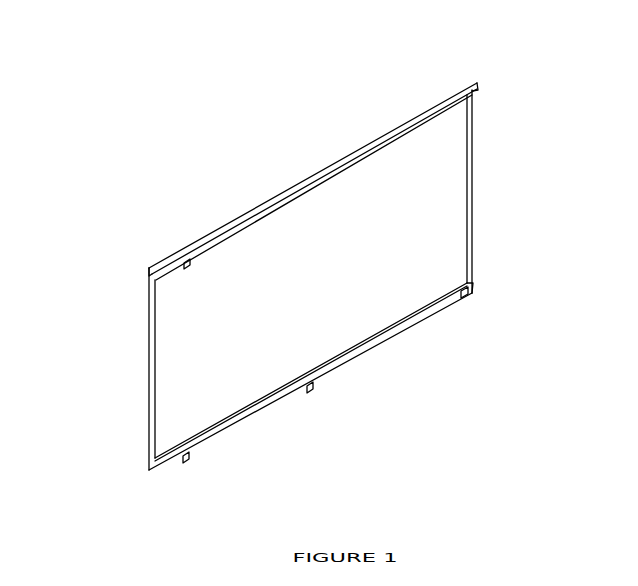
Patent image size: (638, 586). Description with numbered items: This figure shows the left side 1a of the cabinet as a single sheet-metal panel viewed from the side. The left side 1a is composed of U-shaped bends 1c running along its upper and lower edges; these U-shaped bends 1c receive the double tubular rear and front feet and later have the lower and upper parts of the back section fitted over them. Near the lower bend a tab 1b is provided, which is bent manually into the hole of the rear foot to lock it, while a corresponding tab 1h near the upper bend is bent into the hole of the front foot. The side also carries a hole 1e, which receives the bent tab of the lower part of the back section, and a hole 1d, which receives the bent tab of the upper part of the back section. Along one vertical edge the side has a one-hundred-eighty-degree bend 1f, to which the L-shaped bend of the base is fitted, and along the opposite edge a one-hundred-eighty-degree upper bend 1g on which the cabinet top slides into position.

The left side 1a is at (382, 217).
The tab 1b is at (186, 456).
The U-shaped bend 1c is at (293, 200).
The hole 1d is at (462, 298).
The hole 1e is at (310, 386).
The 180° bend 1f is at (155, 365).
The 180° upper bend 1g is at (472, 208).
The tab 1h is at (187, 262).